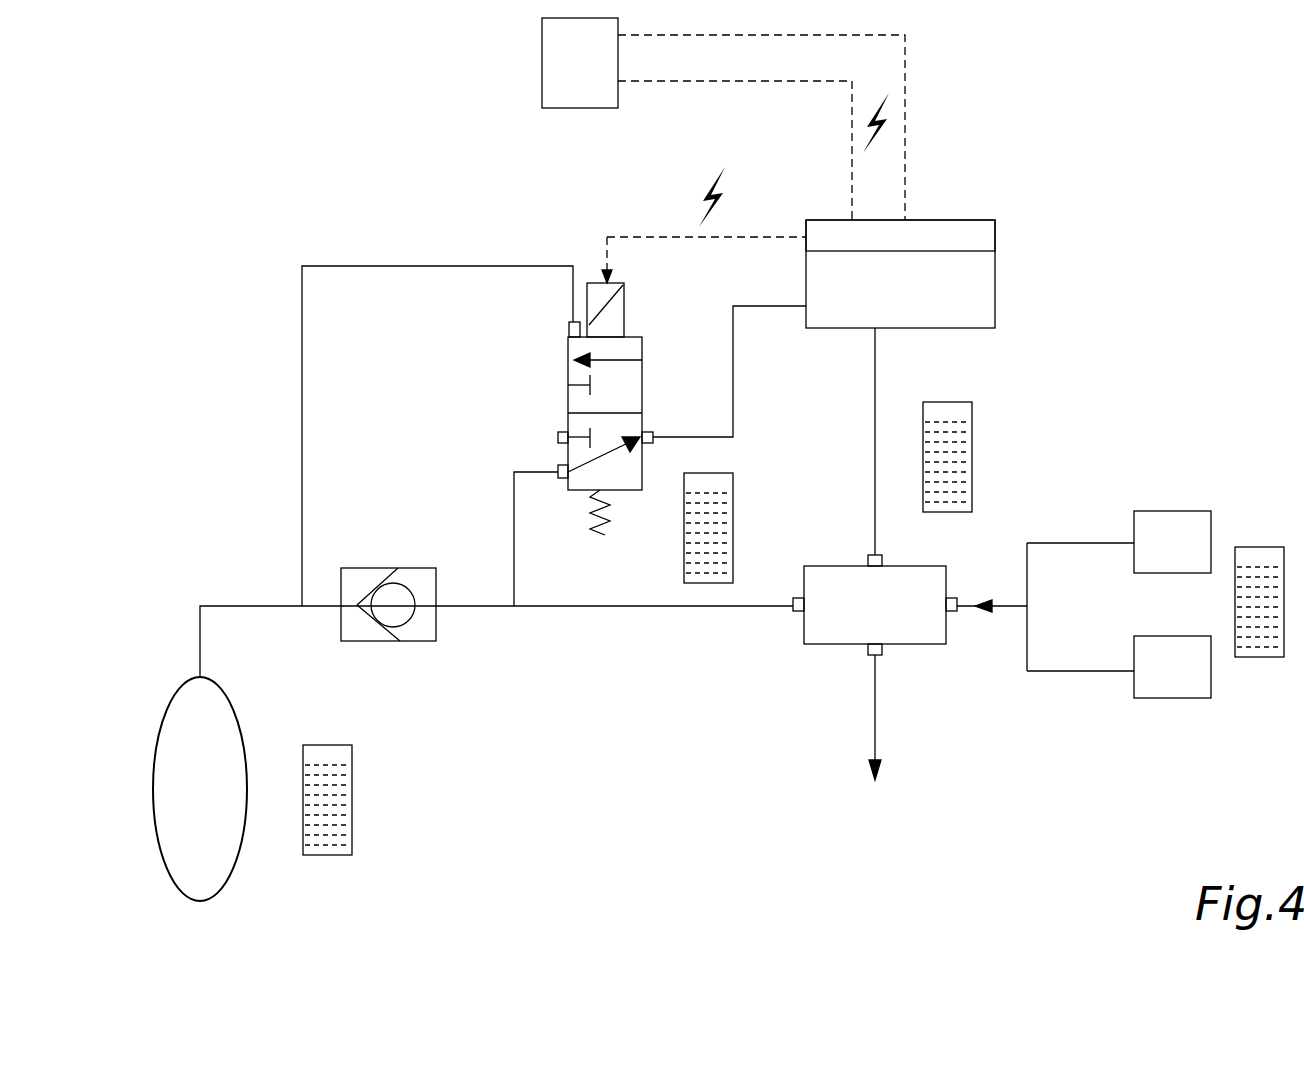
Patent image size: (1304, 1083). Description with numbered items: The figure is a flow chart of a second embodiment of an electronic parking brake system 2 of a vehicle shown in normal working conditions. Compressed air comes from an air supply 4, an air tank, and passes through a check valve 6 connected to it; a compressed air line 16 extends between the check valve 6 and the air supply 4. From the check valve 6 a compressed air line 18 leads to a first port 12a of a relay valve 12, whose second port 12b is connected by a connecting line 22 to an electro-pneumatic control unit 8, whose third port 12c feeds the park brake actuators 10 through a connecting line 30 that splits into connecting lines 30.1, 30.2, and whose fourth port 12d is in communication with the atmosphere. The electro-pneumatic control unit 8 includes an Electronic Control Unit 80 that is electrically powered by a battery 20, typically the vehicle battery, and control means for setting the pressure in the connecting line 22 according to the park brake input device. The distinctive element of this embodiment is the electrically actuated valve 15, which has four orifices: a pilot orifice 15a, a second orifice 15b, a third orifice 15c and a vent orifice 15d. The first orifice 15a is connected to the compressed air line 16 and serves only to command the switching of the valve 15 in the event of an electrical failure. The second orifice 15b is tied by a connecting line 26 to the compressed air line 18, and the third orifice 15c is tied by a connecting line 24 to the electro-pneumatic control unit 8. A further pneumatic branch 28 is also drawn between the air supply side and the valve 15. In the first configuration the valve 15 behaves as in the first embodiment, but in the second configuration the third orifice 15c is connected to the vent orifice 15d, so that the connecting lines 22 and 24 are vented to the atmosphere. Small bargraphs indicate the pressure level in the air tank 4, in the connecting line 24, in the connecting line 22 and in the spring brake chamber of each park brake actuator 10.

The electronic parking brake system 2 is at (298, 232).
The air supply 4 is at (200, 789).
The check valve 6 is at (400, 641).
The electro-pneumatic control unit 8 is at (900, 274).
The Electronic Control Unit 80 is at (900, 235).
The park brake actuator 10 is at (1172, 604).
The relay valve 12 is at (875, 673).
The first port 12a is at (797, 612).
The second port 12b is at (868, 562).
The third port 12c is at (957, 613).
The fourth port 12d is at (868, 650).
The electrically actuated valve 15 is at (546, 375).
The first orifice 15a is at (569, 328).
The second orifice 15b is at (558, 470).
The third orifice 15c is at (653, 437).
The vent orifice 15d is at (558, 437).
The compressed air line 16 is at (232, 606).
The compressed air line 18 is at (590, 606).
The battery 20 is at (723, 119).
The connecting line 22 is at (877, 372).
The connecting line 24 is at (733, 355).
The connecting line 26 is at (514, 543).
The bypass line 28 is at (408, 266).
The connecting line 30 is at (998, 606).
The connecting line 30.1 is at (1050, 543).
The connecting line 30.2 is at (1043, 671).